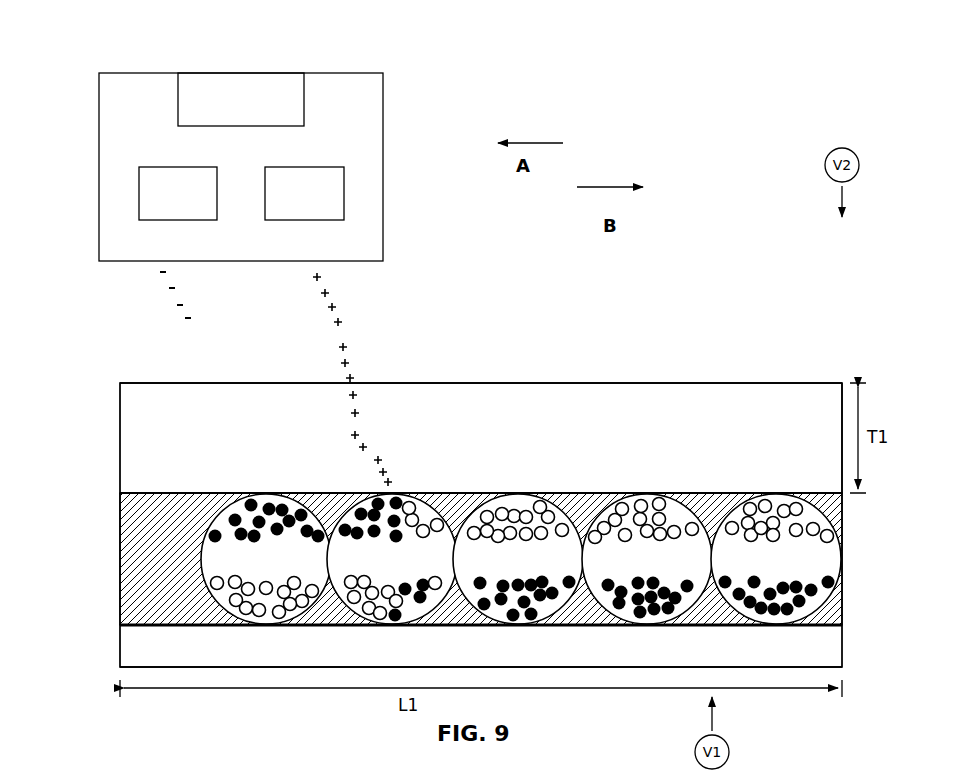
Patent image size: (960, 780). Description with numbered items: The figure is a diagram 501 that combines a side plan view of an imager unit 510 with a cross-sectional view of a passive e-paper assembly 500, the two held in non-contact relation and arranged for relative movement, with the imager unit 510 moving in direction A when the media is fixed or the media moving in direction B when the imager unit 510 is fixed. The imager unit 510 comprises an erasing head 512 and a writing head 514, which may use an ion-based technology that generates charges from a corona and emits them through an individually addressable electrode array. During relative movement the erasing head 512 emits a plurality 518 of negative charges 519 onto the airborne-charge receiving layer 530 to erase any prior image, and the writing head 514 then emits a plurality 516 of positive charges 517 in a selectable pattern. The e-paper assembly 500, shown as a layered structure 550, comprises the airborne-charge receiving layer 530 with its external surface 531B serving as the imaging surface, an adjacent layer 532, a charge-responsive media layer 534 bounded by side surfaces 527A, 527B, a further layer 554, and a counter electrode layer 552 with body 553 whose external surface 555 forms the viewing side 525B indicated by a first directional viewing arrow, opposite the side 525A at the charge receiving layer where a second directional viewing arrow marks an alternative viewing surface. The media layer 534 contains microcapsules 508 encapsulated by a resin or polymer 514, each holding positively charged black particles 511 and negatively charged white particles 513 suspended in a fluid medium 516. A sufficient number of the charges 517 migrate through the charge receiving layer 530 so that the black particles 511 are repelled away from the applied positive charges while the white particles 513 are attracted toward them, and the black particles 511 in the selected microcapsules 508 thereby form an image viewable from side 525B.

The e-paper assembly 500 is at (573, 372).
The diagram 501 is at (611, 70).
The microcapsules 508 is at (818, 563).
The imager unit 510 is at (158, 68).
The black particles 511 is at (795, 582).
The erasing head 512 is at (172, 165).
The white particles 513 is at (805, 548).
The writing head 514 is at (345, 195).
The plurality of positive charges 516 is at (318, 306).
The positive charges 517 is at (345, 321).
The plurality of negative charges 518 is at (157, 300).
The negative charges 519 is at (187, 310).
The side of the e-paper assembly 525A is at (812, 378).
The viewing side 525B is at (820, 665).
The side surface of media layer 527A is at (120, 532).
The side surface of media layer 527B is at (842, 610).
The airborne-charge receiving layer 530 is at (120, 400).
The external surface 531B is at (782, 382).
The layer of e-paper assembly 532 is at (120, 473).
The charge-responsive media layer 534 is at (120, 585).
The e-paper assembly structure 550 is at (125, 372).
The counter electrode layer 552 is at (118, 648).
The counter electrode layer body 553 is at (214, 655).
The layer of e-paper assembly 554 is at (120, 627).
The external surface 555 is at (695, 666).